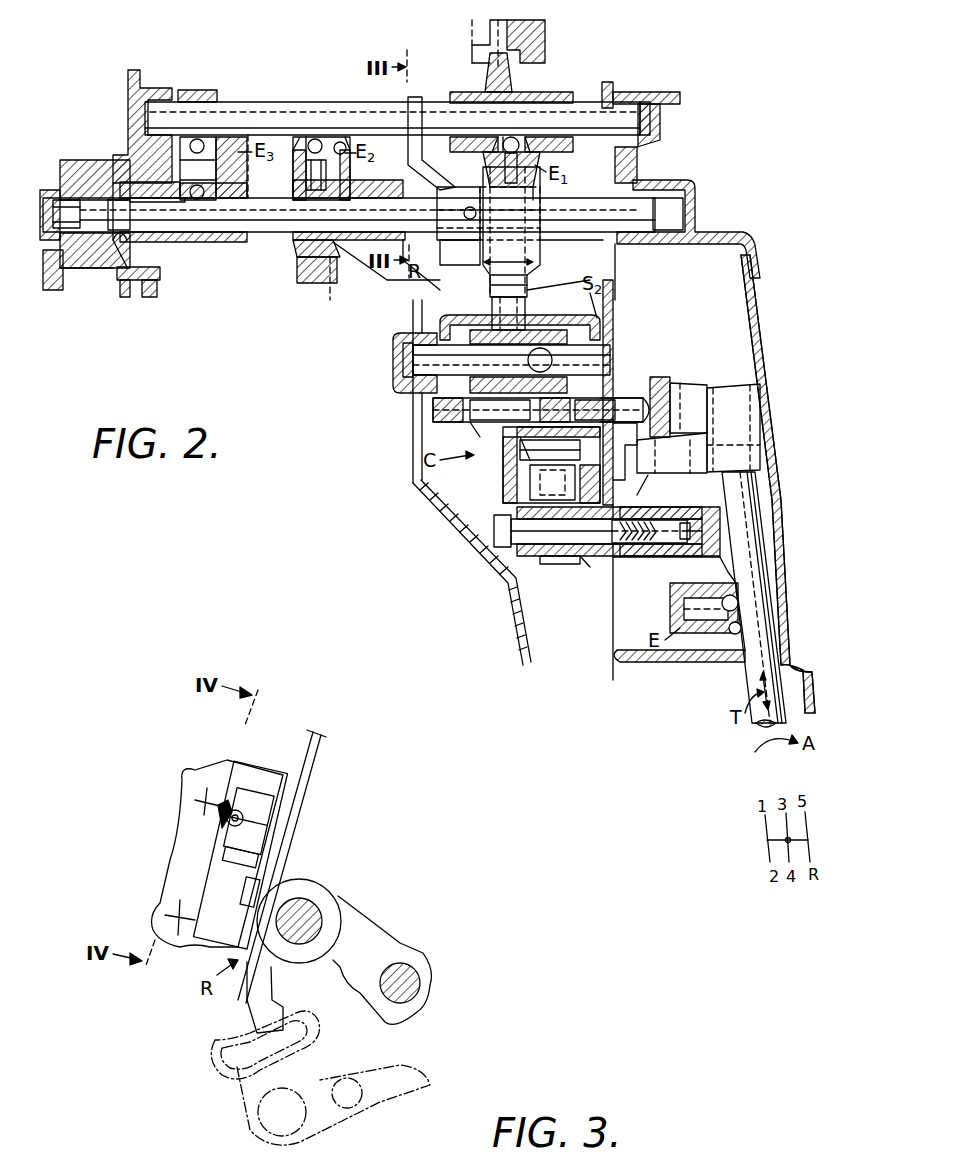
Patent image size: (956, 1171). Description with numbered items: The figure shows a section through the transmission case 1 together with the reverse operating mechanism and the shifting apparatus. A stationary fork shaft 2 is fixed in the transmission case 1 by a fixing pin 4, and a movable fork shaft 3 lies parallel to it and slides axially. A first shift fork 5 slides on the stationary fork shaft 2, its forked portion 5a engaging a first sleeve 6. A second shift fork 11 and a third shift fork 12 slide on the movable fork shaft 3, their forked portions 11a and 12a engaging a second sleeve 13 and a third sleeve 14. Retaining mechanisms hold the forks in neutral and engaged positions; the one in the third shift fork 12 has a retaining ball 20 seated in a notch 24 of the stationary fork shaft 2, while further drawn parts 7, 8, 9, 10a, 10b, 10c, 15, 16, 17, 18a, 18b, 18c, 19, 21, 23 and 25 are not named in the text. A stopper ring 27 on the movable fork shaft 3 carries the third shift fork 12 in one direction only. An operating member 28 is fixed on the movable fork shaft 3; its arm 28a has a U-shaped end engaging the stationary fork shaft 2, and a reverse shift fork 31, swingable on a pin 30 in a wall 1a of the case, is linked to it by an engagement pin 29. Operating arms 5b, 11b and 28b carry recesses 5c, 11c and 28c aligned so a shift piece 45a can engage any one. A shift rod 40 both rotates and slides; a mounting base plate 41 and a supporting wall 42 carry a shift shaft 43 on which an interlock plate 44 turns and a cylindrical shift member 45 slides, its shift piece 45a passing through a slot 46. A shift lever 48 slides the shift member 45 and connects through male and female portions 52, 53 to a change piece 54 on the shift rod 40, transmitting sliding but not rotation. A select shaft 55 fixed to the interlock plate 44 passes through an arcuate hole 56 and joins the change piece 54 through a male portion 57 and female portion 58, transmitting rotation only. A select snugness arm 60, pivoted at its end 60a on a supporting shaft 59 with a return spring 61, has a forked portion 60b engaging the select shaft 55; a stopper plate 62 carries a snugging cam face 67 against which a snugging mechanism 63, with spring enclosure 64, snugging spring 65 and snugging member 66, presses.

In FIG. 2, the transmission case 1 is at (640, 140).
In FIG. 3, the wall 1a is at (255, 770).
In FIG. 2, the stationary fork shaft 2 is at (254, 106).
In FIG. 3, the stationary fork shaft 2 is at (420, 992).
In FIG. 2, the movable fork shaft 3 is at (363, 226).
In FIG. 3, the movable fork shaft 3 is at (318, 920).
In FIG. 2, the fixing pin 4 is at (602, 83).
In FIG. 2, the first shift fork 5 is at (530, 93).
In FIG. 2, the forked portion 5a is at (500, 40).
In FIG. 2, the operating arm 5b is at (530, 236).
In FIG. 2, the engagement recess 5c is at (523, 268).
In FIG. 2, the first sleeve 6 is at (475, 33).
In FIG. 2, the bearing housing 7 is at (490, 164).
In FIG. 2, the ball 8 is at (515, 140).
In FIG. 2, the support 9 is at (540, 188).
In FIG. 2, the bearing race 10a is at (535, 140).
In FIG. 2, the bearing race 10b is at (495, 140).
In FIG. 2, the bearing race 10c is at (506, 137).
In FIG. 2, the second shift fork 11 is at (349, 198).
In FIG. 2, the forked portion 11a is at (307, 280).
In FIG. 2, the operating arm 11b is at (438, 282).
In FIG. 2, the engagement recess 11c is at (571, 257).
In FIG. 2, the third shift fork 12 is at (200, 243).
In FIG. 2, the forked portion 12a is at (150, 286).
In FIG. 2, the second sleeve 13 is at (297, 266).
In FIG. 2, the third sleeve 14 is at (118, 282).
In FIG. 2, the bearing 15 is at (296, 168).
In FIG. 2, the ball 16 is at (318, 139).
In FIG. 2, the roller 17 is at (330, 165).
In FIG. 2, the race 18a is at (348, 138).
In FIG. 2, the race 18b is at (292, 142).
In FIG. 2, the race 18c is at (306, 138).
In FIG. 2, the bearing 19 is at (186, 168).
In FIG. 2, the retaining ball 20 is at (200, 140).
In FIG. 2, the spacer 21 is at (161, 207).
In FIG. 2, the inner race 23 is at (216, 172).
In FIG. 2, the notch 24 is at (196, 140).
In FIG. 2, the spacer 25 is at (213, 200).
In FIG. 2, the stopper ring 27 is at (127, 213).
In FIG. 2, the operating member 28 is at (437, 207).
In FIG. 3, the operating member 28 is at (318, 875).
In FIG. 2, the arm 28a is at (416, 152).
In FIG. 3, the arm 28a is at (375, 937).
In FIG. 2, the operating arm 28b is at (460, 257).
In FIG. 3, the operating arm 28b is at (272, 985).
In FIG. 2, the engagement recess 28c is at (570, 290).
In FIG. 3, the engagement recess 28c is at (240, 1030).
In FIG. 2, the engagement pin 29 is at (464, 214).
In FIG. 3, the engagement pin 29 is at (243, 890).
In FIG. 3, the pin 30 is at (232, 840).
In FIG. 3, the reverse shift fork 31 is at (302, 778).
In FIG. 2, the shift rod 40 is at (770, 556).
In FIG. 2, the mounting base plate 41 is at (620, 395).
In FIG. 2, the supporting wall 42 is at (420, 496).
In FIG. 2, the shift shaft 43 is at (413, 355).
In FIG. 2, the interlock plate 44 is at (472, 384).
In FIG. 2, the cylindrical shift member 45 is at (480, 393).
In FIG. 2, the shift piece 45a is at (527, 312).
In FIG. 2, the slot 46 is at (470, 322).
In FIG. 2, the shift lever 48 is at (640, 468).
In FIG. 2, the connecting male portion 52 is at (653, 470).
In FIG. 2, the connecting female portion 53 is at (684, 470).
In FIG. 2, the change piece 54 is at (740, 387).
In FIG. 2, the select shaft 55 is at (470, 425).
In FIG. 2, the arcuate hole 56 is at (625, 451).
In FIG. 2, the male portion 57 is at (657, 395).
In FIG. 2, the second female portion 58 is at (670, 352).
In FIG. 2, the supporting shaft 59 is at (525, 553).
In FIG. 2, the select snugness arm 60 is at (552, 482).
In FIG. 2, the rotatable end 60a is at (556, 572).
In FIG. 2, the forked portion 60b is at (577, 408).
In FIG. 2, the return spring 61 is at (580, 572).
In FIG. 2, the stopper plate 62 is at (503, 488).
In FIG. 2, the snugging mechanism 63 is at (538, 409).
In FIG. 2, the spring enclosure 64 is at (500, 408).
In FIG. 2, the snugging spring 65 is at (592, 484).
In FIG. 2, the snugging member 66 is at (525, 433).
In FIG. 2, the snugging cam face 67 is at (520, 463).